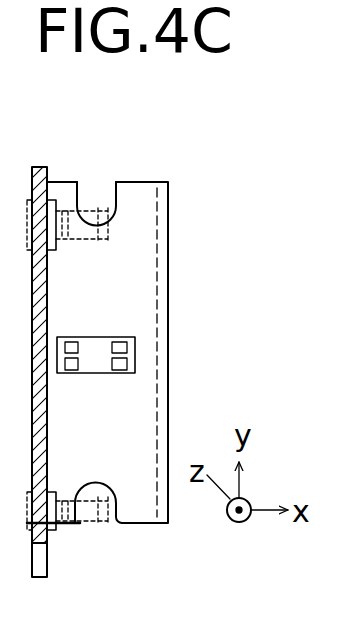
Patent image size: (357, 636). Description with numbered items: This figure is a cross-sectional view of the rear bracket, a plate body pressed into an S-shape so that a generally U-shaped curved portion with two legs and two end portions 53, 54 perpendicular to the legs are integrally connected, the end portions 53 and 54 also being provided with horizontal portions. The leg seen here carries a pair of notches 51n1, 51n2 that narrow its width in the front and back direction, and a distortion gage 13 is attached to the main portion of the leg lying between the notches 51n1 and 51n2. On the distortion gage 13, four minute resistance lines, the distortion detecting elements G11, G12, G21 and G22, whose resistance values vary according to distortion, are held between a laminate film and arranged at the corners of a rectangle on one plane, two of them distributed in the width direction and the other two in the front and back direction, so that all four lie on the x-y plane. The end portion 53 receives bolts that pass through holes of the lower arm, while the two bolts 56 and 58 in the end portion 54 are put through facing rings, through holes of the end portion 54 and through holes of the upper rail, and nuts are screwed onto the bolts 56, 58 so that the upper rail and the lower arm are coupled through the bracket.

The distortion gage 13 is at (90, 335).
The distortion detecting element G11 is at (77, 368).
The distortion detecting element G12 is at (127, 364).
The distortion detecting element G21 is at (78, 348).
The distortion detecting element G22 is at (127, 347).
The notch 51n1 is at (113, 525).
The notch 51n2 is at (117, 192).
The end portion 53 is at (37, 402).
The end portion 54 is at (40, 560).
The bolt 56 is at (98, 462).
The bolt 58 is at (91, 207).